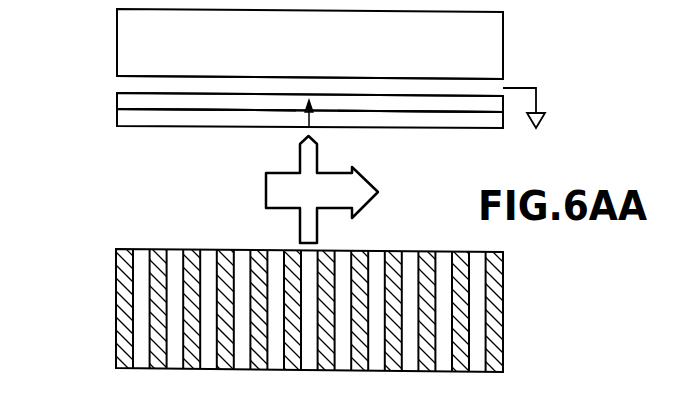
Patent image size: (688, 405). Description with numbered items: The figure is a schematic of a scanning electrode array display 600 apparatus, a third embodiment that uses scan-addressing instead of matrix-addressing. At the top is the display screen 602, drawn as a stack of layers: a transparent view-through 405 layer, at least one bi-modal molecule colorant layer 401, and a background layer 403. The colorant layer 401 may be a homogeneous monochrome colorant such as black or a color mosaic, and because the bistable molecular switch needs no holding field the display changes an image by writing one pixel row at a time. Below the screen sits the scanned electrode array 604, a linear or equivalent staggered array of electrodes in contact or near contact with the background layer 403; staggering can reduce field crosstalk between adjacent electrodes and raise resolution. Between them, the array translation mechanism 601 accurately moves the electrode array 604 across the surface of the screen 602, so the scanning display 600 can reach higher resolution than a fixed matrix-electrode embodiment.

The transparent view-through layer 405 is at (117, 36).
The bi-modal molecule colorant layer 401 is at (117, 103).
The background layer 403 is at (117, 116).
The display screen 602 is at (326, 73).
The scanning electrode array display apparatus 600 is at (127, 174).
The array translation mechanism 601 is at (266, 193).
The scanned electrode array 604 is at (116, 292).